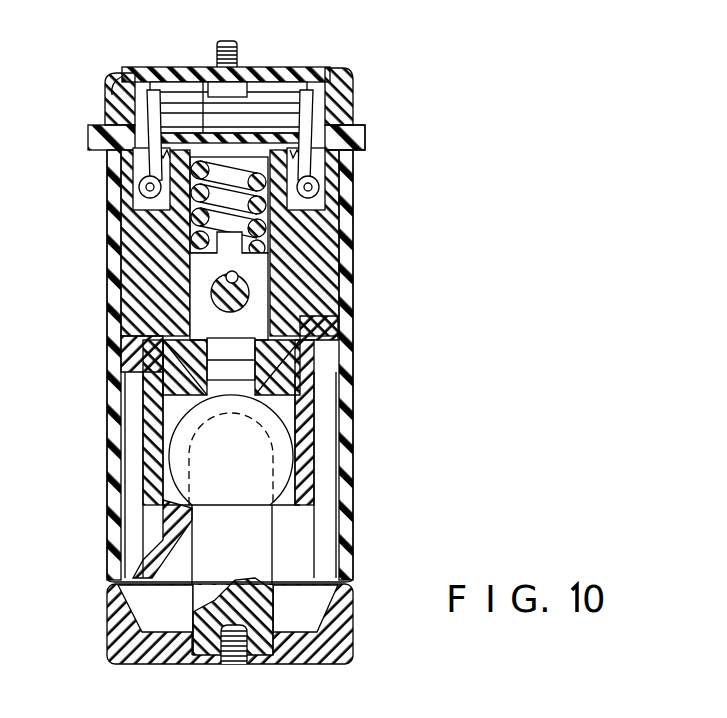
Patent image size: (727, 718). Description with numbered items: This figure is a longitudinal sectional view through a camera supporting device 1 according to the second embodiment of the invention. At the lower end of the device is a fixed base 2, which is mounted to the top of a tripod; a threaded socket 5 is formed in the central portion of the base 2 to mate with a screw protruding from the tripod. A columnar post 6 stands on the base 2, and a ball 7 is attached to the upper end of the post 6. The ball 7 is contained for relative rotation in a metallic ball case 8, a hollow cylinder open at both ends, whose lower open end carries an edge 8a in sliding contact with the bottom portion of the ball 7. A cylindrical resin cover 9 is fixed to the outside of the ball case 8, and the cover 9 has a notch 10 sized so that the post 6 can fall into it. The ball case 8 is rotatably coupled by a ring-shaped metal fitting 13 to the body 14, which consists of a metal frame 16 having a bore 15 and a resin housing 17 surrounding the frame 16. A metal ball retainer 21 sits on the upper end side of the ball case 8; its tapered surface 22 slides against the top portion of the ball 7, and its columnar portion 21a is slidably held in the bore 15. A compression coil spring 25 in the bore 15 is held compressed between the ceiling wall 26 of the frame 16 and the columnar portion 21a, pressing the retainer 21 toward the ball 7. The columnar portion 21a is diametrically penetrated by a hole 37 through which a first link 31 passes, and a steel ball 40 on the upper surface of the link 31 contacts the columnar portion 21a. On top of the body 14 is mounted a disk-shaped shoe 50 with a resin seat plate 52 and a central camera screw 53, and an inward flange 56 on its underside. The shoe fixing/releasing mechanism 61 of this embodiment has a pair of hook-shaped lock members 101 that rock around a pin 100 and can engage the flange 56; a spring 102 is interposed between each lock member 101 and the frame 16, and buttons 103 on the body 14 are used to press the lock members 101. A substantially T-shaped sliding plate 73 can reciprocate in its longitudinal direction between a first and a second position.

The camera supporting device 1 is at (94, 344).
The fixed base 2 is at (112, 650).
The threaded socket 5 is at (240, 660).
The columnar post 6 is at (272, 618).
The ball 7 is at (175, 470).
The ball case 8 is at (163, 448).
The edge 8a is at (165, 530).
The resin cover 9 is at (114, 396).
The notch 10 is at (348, 484).
The ring-shaped metal fitting 13 is at (352, 351).
The body 14 is at (358, 268).
The bore 15 is at (252, 292).
The metal frame 16 is at (300, 248).
The resin housing 17 is at (350, 226).
The ball retainer 21 is at (285, 395).
The columnar portion 21a is at (226, 282).
The tapered surface 22 is at (275, 418).
The compression coil spring 25 is at (190, 223).
The ceiling wall 26 is at (270, 150).
The first link 31 is at (160, 320).
The hole 37 is at (320, 330).
The steel ball 40 is at (195, 288).
The shoe 50 is at (112, 92).
The resin seat plate 52 is at (178, 68).
The camera screw 53 is at (226, 44).
The inward flange 56 is at (254, 105).
The shoe fixing/releasing mechanism 61 is at (365, 125).
The sliding plate 73 is at (207, 105).
The pin 100 is at (140, 196).
The lock member 101 is at (112, 78).
The spring 102 is at (146, 184).
The button 103 is at (92, 126).